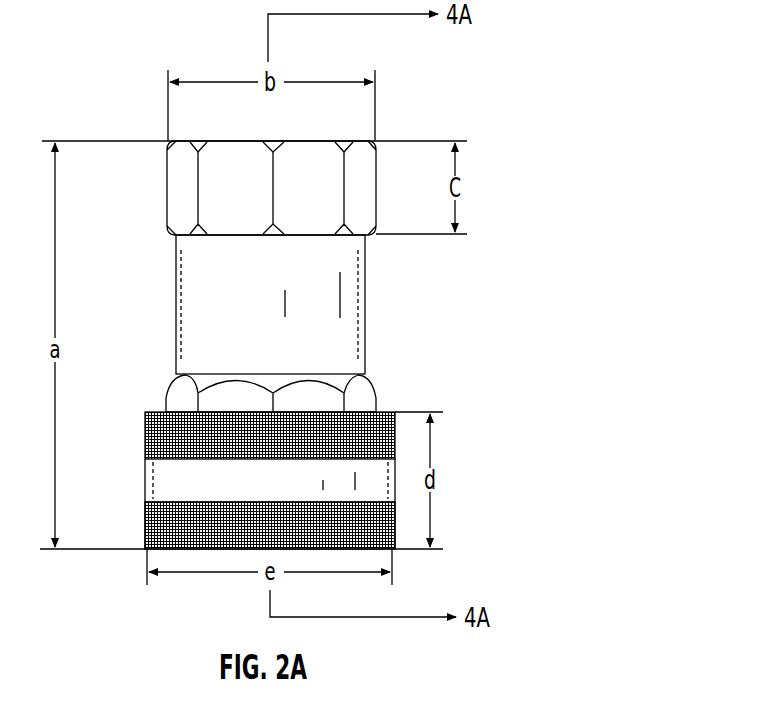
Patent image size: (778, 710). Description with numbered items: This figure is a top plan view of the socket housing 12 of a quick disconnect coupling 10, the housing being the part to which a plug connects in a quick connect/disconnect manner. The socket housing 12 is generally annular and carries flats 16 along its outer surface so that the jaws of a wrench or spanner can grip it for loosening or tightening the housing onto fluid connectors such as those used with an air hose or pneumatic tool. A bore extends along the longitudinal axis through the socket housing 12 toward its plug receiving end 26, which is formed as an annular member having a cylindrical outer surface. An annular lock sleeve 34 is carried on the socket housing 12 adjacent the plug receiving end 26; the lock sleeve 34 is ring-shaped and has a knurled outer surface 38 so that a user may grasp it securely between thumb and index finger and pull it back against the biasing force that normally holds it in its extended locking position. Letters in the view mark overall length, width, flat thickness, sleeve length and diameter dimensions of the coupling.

The quick disconnect coupling 10 is at (368, 364).
The socket housing 12 is at (290, 344).
The flats 16 is at (175, 191).
The plug receiving end 26 is at (263, 499).
The lock sleeve 34 is at (148, 478).
The knurled outer surface 38 is at (147, 527).